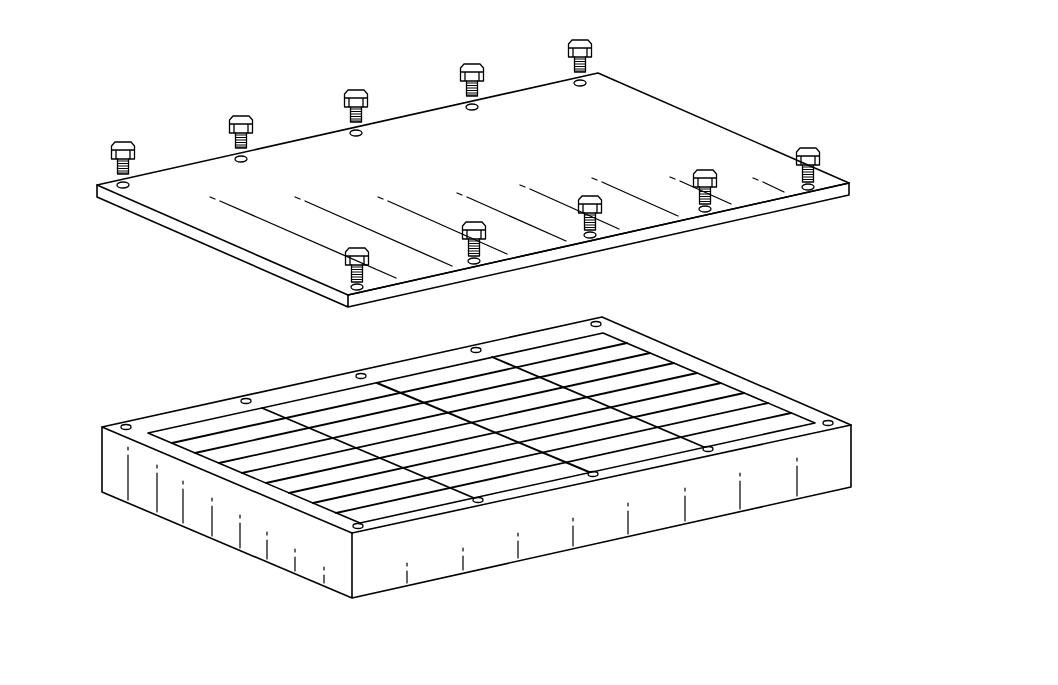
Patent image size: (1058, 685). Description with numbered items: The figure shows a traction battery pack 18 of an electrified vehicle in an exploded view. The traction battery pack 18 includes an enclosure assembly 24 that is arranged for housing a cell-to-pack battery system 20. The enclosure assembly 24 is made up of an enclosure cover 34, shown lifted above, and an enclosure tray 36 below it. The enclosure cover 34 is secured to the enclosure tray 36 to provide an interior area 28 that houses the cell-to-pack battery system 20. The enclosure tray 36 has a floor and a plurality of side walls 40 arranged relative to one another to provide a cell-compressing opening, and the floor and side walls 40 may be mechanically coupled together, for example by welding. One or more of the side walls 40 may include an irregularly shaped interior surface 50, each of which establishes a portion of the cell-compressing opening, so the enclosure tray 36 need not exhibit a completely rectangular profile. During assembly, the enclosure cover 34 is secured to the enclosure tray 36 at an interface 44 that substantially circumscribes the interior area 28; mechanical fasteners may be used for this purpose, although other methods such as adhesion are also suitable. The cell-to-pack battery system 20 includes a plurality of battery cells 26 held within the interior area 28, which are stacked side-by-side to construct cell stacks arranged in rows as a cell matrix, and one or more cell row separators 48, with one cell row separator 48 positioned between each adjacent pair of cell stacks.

The traction battery pack 18 is at (877, 73).
The cell-to-pack battery system 20 is at (477, 405).
The enclosure assembly 24 is at (100, 208).
The battery cells 26 is at (205, 443).
The interior area 28 is at (653, 287).
The enclosure cover 34 is at (292, 170).
The enclosure tray 36 is at (476, 452).
The side walls 40 is at (273, 385).
The interface 44 is at (122, 142).
The cell row separators 48 is at (290, 418).
The irregularly shaped interior surface 50 is at (762, 433).